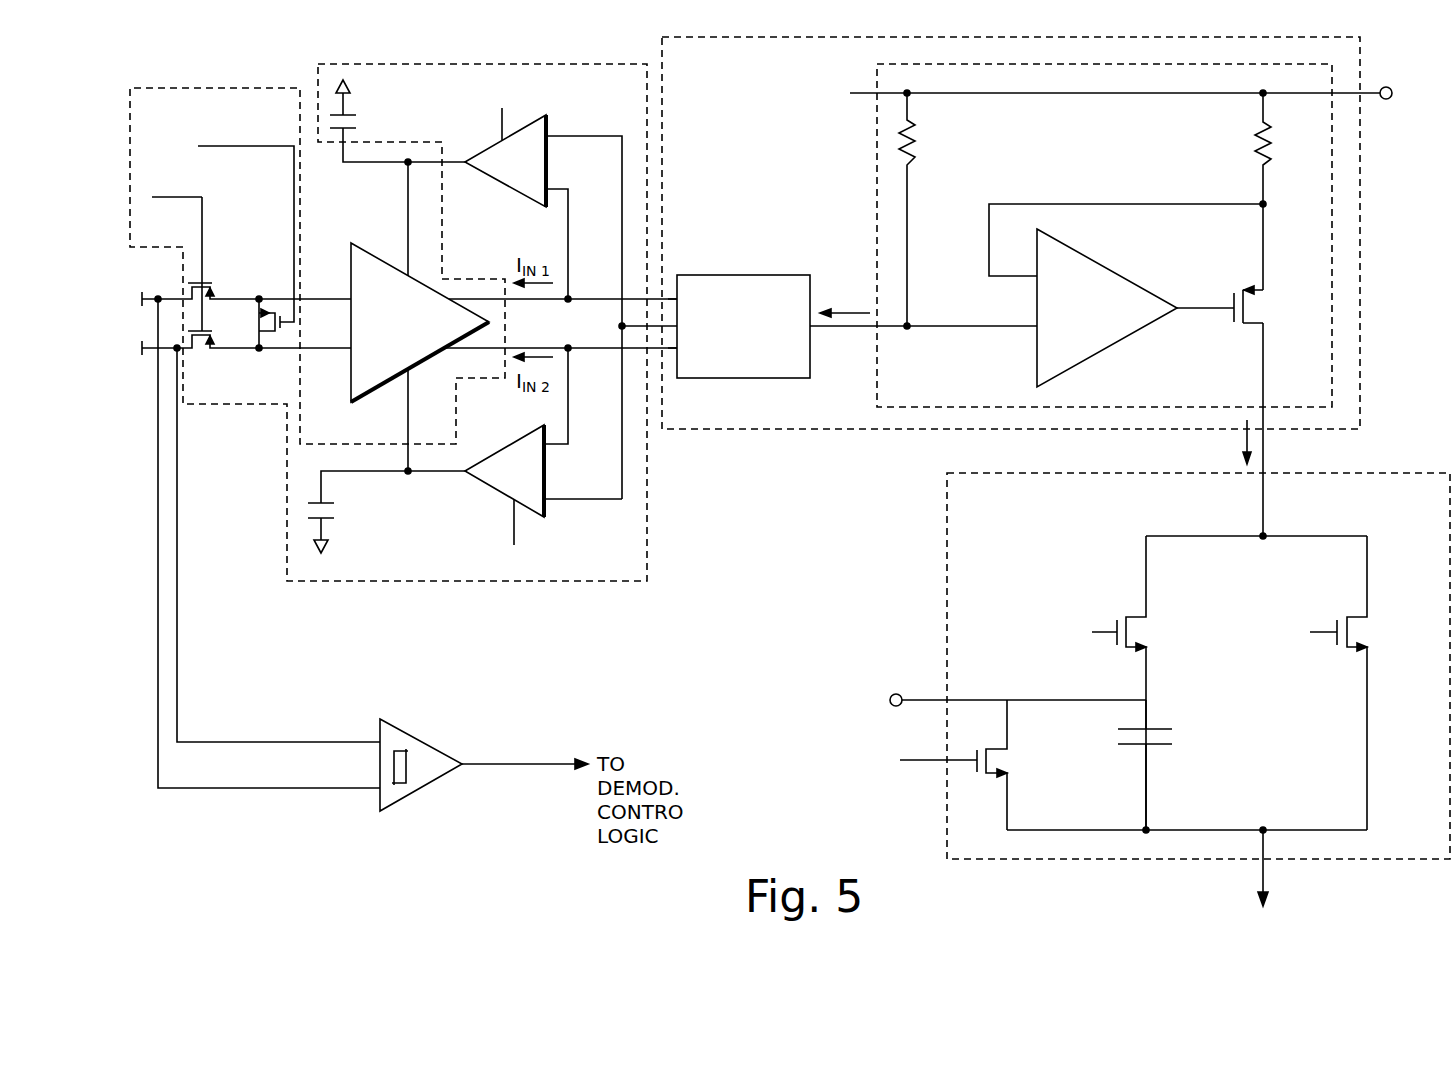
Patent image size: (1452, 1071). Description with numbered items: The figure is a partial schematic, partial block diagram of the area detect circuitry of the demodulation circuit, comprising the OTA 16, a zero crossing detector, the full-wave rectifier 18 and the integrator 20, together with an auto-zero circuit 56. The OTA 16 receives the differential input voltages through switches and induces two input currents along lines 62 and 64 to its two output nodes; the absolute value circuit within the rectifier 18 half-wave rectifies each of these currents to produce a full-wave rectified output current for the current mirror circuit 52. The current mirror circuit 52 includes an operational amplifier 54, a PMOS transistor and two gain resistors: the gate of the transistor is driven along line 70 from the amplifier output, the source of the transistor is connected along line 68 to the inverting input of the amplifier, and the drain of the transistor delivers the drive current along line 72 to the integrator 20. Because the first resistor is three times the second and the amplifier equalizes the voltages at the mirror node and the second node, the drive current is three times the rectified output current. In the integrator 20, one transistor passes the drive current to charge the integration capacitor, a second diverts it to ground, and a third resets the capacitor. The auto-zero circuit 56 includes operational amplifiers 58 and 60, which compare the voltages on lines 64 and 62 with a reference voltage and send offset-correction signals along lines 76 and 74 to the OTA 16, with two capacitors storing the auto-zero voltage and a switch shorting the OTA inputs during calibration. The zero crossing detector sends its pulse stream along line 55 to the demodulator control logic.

The OTA 16 is at (351, 254).
The full-wave rectifier 18 is at (803, 430).
The integrator 20 is at (947, 537).
The current mirror circuit 52 is at (877, 375).
The operational amplifier 54 is at (1133, 285).
The line 55 is at (513, 764).
The auto-zero circuit 56 is at (614, 582).
The operational amplifier 58 is at (545, 508).
The operational amplifier 60 is at (500, 183).
The line 62 is at (670, 290).
The line 64 is at (670, 350).
The line 68 is at (1020, 276).
The line 70 is at (1198, 309).
The line 72 is at (1266, 448).
The line 74 is at (408, 208).
The line 76 is at (408, 404).